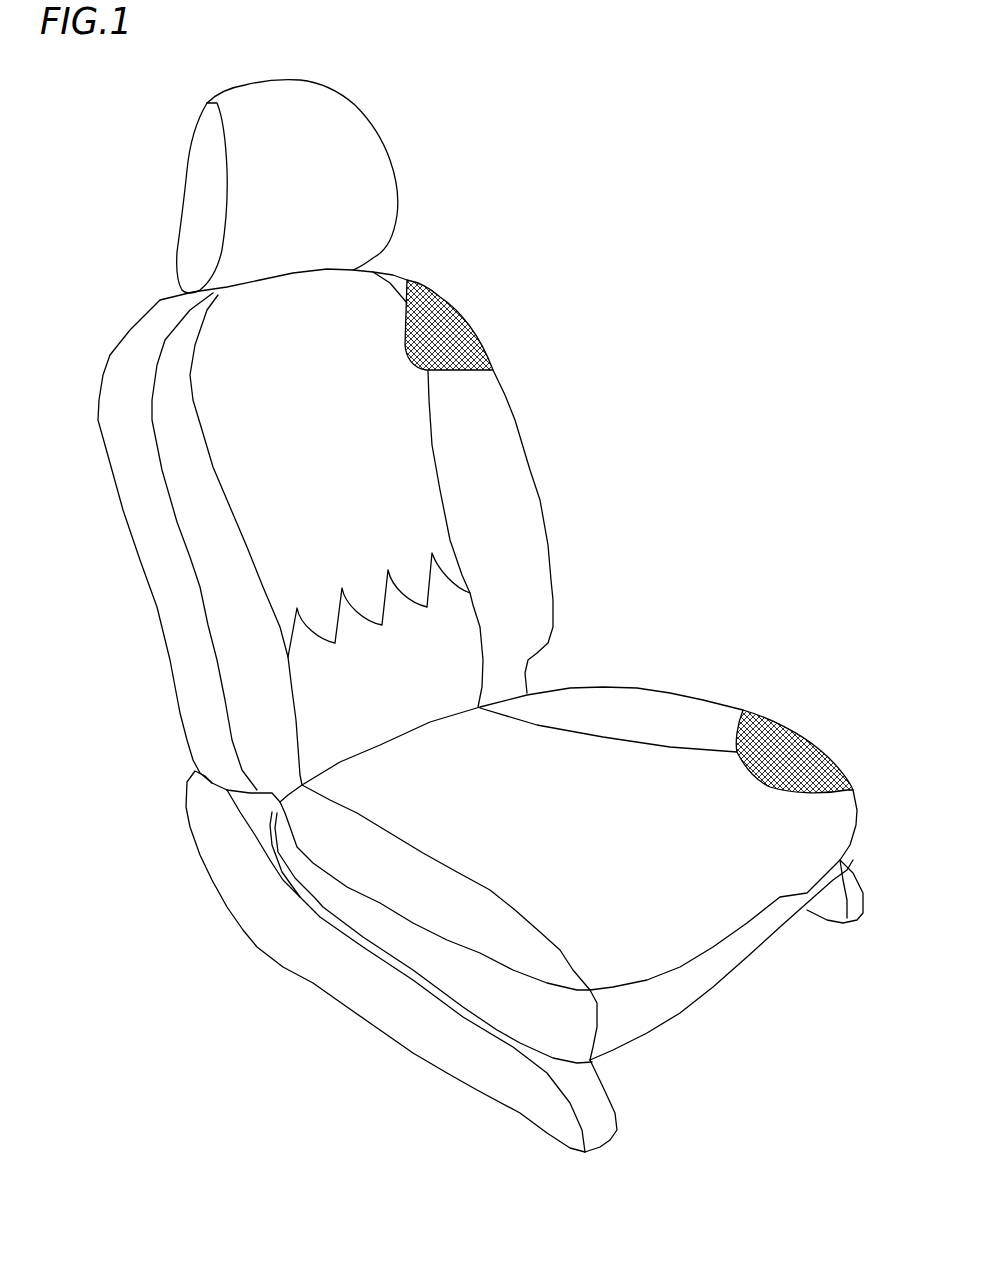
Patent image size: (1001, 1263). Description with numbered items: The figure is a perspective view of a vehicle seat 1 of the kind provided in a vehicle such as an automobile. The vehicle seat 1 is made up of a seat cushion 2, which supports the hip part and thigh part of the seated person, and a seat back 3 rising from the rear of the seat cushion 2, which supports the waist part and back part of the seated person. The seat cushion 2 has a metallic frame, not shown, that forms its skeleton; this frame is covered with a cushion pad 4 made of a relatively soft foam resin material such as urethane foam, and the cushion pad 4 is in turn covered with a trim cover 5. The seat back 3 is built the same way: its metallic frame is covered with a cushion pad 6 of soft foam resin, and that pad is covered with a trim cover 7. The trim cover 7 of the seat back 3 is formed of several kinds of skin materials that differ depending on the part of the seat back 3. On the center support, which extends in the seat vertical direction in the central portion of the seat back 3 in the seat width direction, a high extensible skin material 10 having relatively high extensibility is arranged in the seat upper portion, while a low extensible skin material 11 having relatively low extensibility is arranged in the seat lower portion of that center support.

The vehicle seat 1 is at (444, 605).
The seat cushion 2 is at (718, 673).
The seat back 3 is at (533, 406).
The cushion pad 4 is at (800, 747).
The trim cover 5 is at (622, 708).
The cushion pad 6 is at (438, 327).
The trim cover 7 is at (517, 503).
The high extensible skin material 10 is at (247, 426).
The low extensible skin material 11 is at (320, 693).